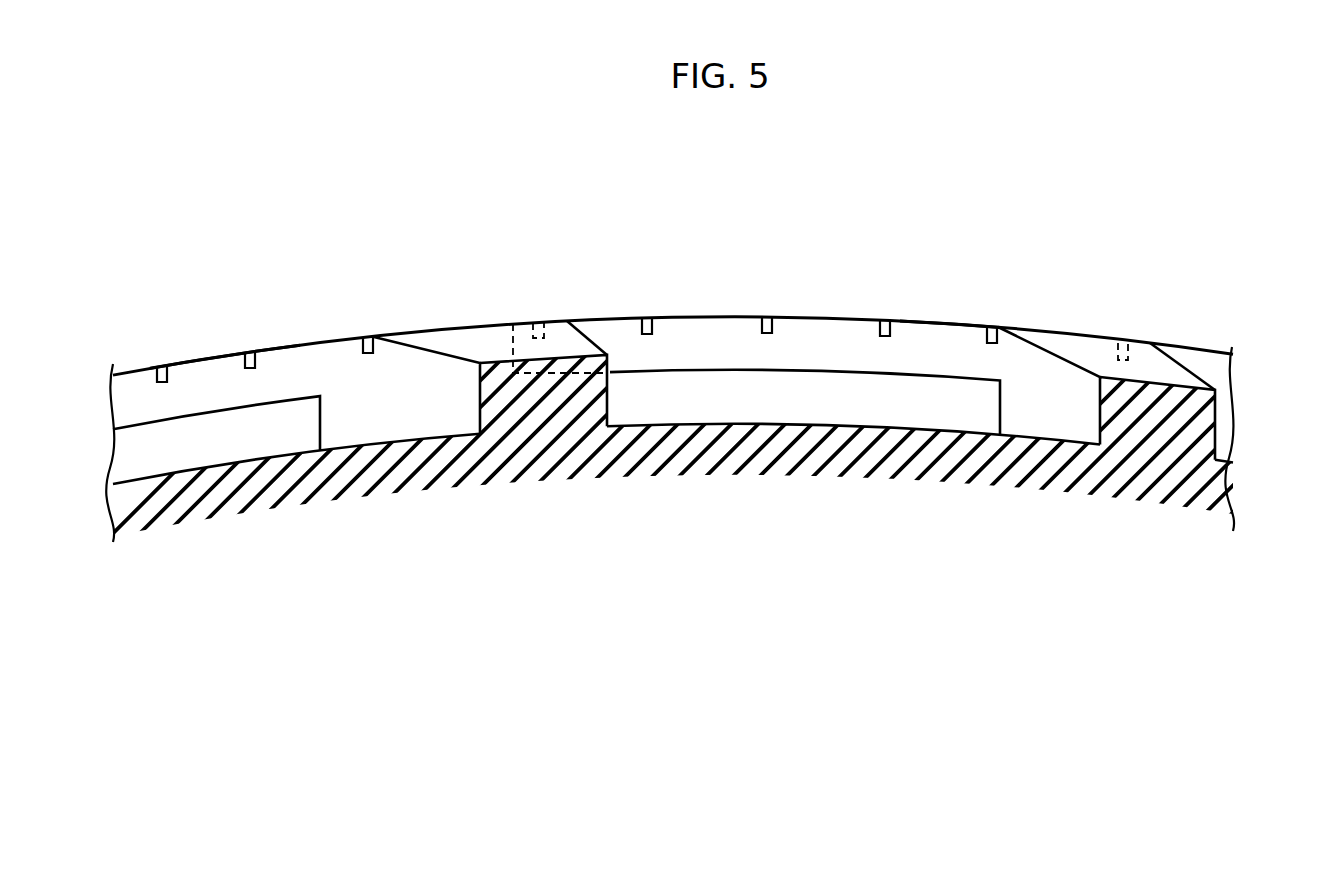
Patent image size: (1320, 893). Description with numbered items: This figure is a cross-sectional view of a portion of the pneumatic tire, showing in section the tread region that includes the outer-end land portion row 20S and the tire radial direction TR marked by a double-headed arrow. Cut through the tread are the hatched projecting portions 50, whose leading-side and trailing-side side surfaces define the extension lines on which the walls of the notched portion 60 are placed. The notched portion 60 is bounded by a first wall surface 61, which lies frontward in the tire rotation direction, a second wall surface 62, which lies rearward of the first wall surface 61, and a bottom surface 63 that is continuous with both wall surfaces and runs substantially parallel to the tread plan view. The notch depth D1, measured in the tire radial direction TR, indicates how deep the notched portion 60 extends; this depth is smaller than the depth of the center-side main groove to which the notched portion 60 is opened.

The outer-end land portion row 20S is at (714, 316).
The projecting portion 50 is at (472, 330).
The notched portion 60 is at (295, 364).
The first wall surface 61 is at (596, 337).
The second wall surface 62 is at (212, 372).
The bottom surface 63 is at (213, 401).
The notch depth D1 is at (346, 340).
The tire radial direction TR is at (1268, 384).